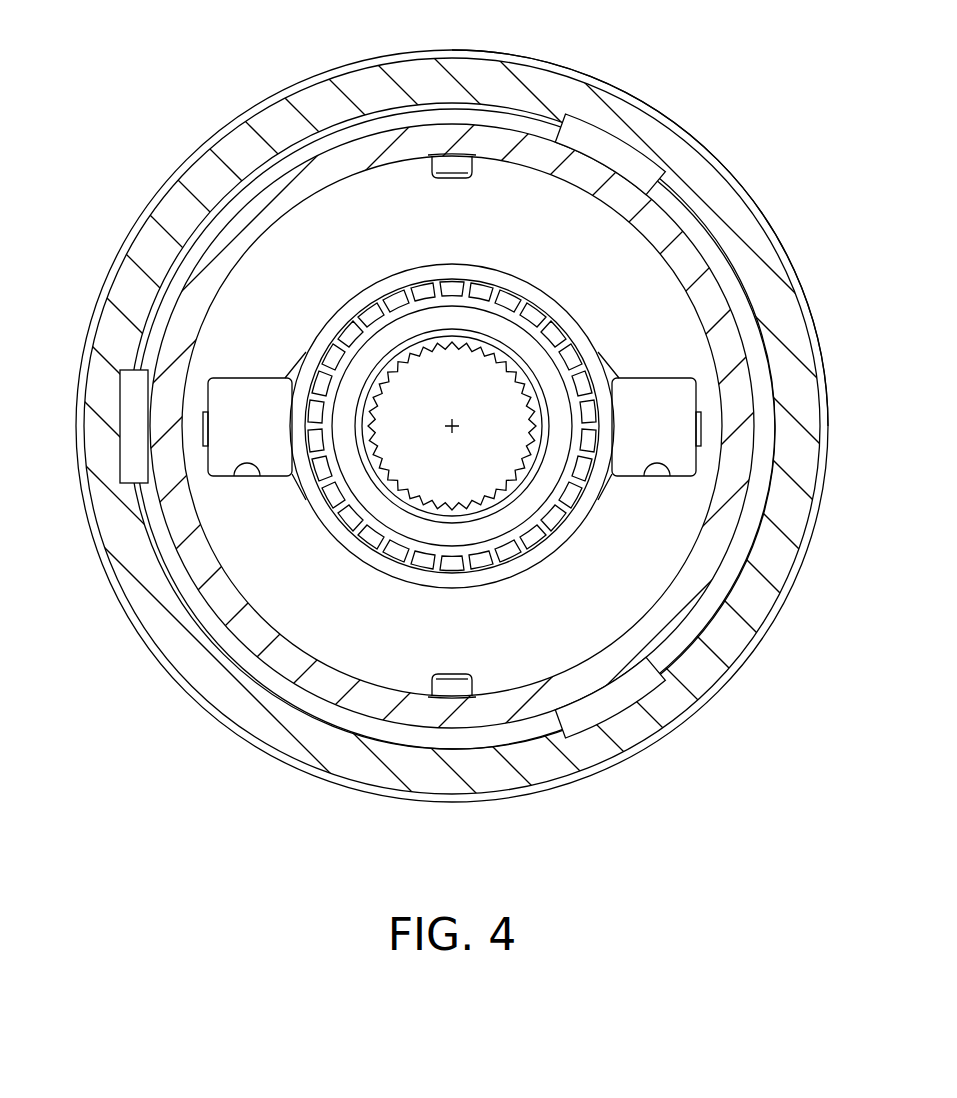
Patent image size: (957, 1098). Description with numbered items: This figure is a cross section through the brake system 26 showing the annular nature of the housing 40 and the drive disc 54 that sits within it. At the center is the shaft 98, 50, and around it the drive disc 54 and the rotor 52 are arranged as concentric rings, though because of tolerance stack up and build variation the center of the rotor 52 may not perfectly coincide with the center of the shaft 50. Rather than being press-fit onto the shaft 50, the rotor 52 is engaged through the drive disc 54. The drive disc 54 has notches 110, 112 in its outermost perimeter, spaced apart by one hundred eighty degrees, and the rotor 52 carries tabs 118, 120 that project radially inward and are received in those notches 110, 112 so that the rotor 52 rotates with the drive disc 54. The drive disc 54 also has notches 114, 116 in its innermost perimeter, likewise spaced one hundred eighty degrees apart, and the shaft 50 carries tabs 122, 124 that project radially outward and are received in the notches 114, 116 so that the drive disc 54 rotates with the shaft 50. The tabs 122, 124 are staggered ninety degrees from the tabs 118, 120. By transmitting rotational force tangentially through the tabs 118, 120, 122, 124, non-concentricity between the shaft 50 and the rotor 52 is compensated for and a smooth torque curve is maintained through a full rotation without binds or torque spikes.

The brake system 26 is at (712, 150).
The housing 40 is at (824, 482).
The shaft 50 is at (513, 518).
The rotor 52 is at (177, 513).
The drive disc 54 is at (615, 280).
The splined shaft 98 is at (450, 423).
The notch 110 is at (448, 158).
The notch 112 is at (450, 697).
The notch 114 is at (246, 480).
The notch 116 is at (657, 480).
The tab 118 is at (442, 167).
The tab 120 is at (460, 683).
The tab 122 is at (248, 390).
The tab 124 is at (655, 390).